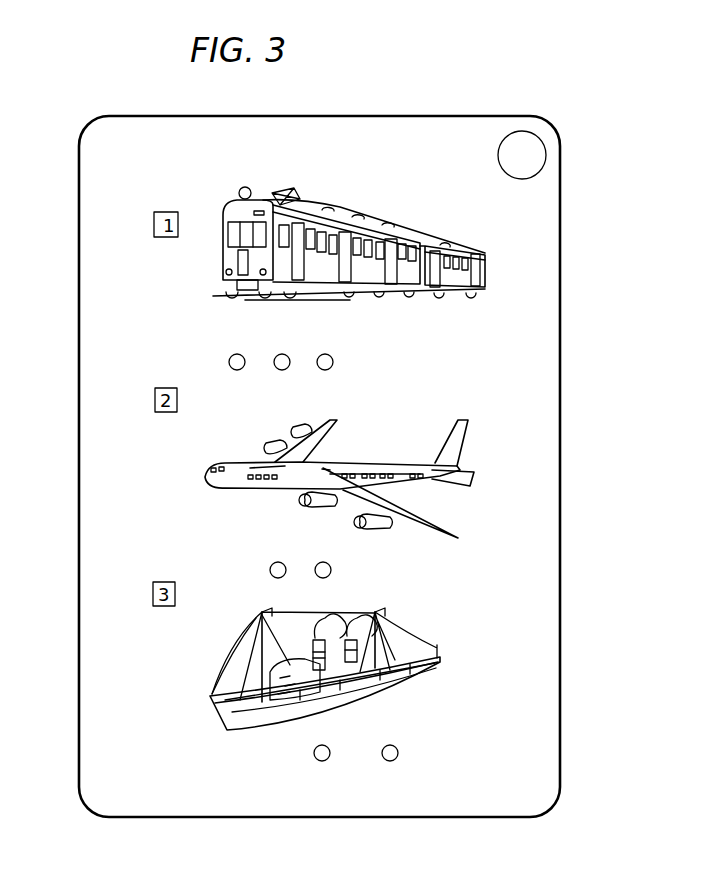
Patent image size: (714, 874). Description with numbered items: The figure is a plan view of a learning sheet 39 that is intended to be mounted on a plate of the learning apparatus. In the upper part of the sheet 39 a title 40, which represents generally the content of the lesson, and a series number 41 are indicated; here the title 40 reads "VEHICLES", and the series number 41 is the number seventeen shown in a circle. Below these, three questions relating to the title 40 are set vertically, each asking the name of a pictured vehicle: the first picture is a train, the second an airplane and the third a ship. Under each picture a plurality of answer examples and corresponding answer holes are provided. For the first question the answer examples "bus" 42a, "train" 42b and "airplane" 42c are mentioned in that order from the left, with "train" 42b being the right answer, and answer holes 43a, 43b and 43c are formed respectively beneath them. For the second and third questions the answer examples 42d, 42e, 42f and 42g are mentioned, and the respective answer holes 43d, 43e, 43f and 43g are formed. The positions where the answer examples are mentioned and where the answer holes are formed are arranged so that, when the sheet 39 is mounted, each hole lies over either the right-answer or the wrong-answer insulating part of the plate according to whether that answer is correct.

The learning sheet 39 is at (566, 192).
The title 40 is at (419, 133).
The series number 41 is at (533, 133).
The answer example "bus" 42a is at (226, 348).
The answer example "train" 42b is at (294, 354).
The answer example "airplane" 42c is at (339, 353).
The answer example 42d is at (266, 560).
The answer example 42e is at (333, 565).
The answer example 42f is at (306, 748).
The answer example 42g is at (405, 748).
The answer hole 43a is at (237, 370).
The answer hole 43b is at (282, 370).
The answer hole 43c is at (330, 368).
The answer hole 43d is at (278, 578).
The answer hole 43e is at (323, 578).
The answer hole 43f is at (322, 761).
The answer hole 43g is at (390, 761).